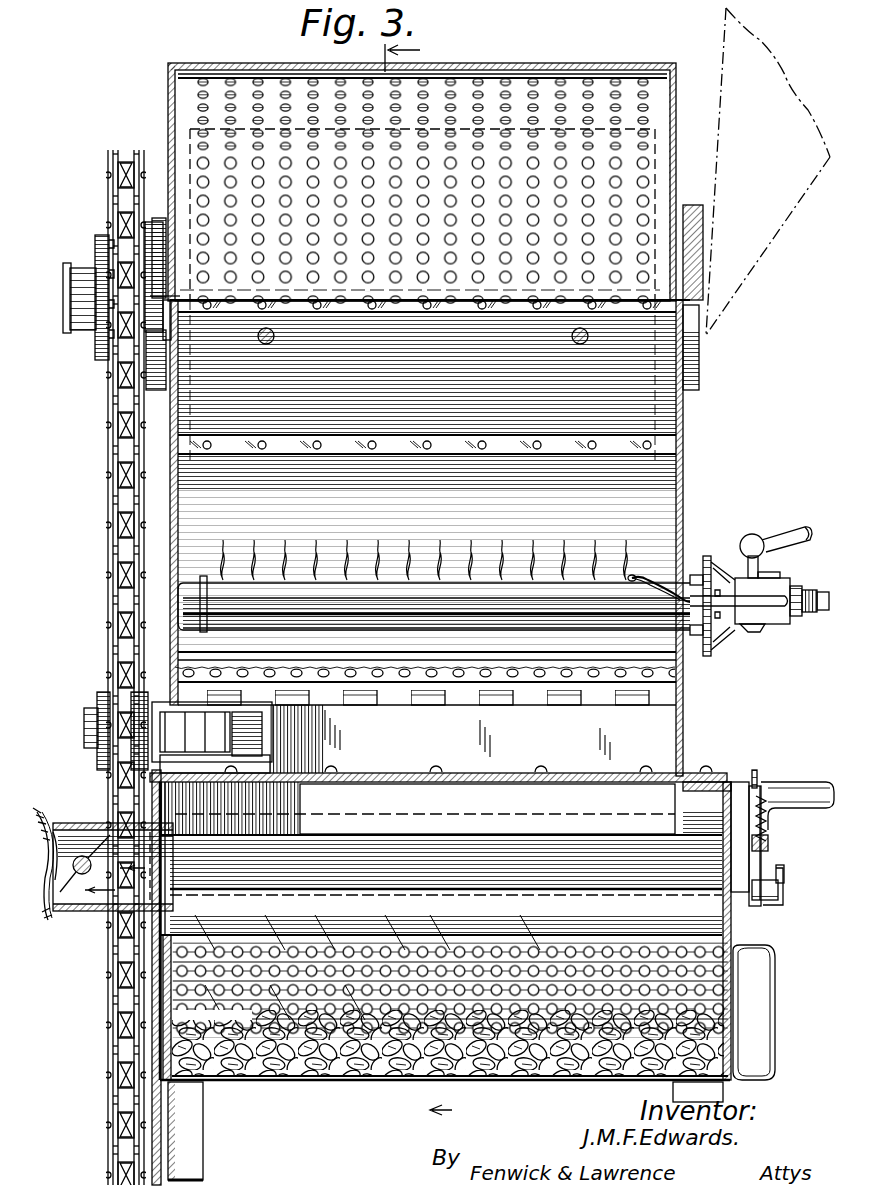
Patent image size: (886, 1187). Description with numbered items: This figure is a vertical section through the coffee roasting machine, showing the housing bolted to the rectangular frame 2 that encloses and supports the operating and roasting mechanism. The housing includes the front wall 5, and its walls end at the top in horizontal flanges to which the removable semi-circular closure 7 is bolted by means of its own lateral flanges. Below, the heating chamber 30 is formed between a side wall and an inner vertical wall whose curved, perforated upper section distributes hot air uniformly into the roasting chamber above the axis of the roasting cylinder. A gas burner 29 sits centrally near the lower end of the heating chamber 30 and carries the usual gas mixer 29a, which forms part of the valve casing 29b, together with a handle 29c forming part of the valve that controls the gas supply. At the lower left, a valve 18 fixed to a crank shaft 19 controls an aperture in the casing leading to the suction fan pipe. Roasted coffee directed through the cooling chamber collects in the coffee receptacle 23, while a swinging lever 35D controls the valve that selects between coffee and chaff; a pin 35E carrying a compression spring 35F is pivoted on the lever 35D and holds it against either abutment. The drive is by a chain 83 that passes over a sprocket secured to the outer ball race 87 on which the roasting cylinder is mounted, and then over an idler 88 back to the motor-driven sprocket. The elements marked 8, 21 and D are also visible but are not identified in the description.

The rectangular frame 2 is at (192, 1130).
The front wall 5 is at (684, 527).
The removable semi-circular closure 7 is at (168, 103).
The door 8 is at (782, 238).
The valve 18 is at (72, 865).
The crank shaft 19 is at (84, 870).
The feed flap 21 is at (80, 823).
The coffee receptacle 23 is at (345, 1030).
The gas burner 29 is at (452, 585).
The gas mixer 29a is at (727, 580).
The valve casing 29b is at (782, 618).
The handle 29c is at (792, 530).
The heating chamber 30 is at (695, 488).
The swinging lever 35D is at (814, 768).
The pin 35E is at (754, 770).
The compression spring 35F is at (772, 820).
The chain 83 is at (108, 462).
The outer ball race 87 is at (96, 240).
The idler 88 is at (118, 681).
The perforated plate D is at (680, 676).